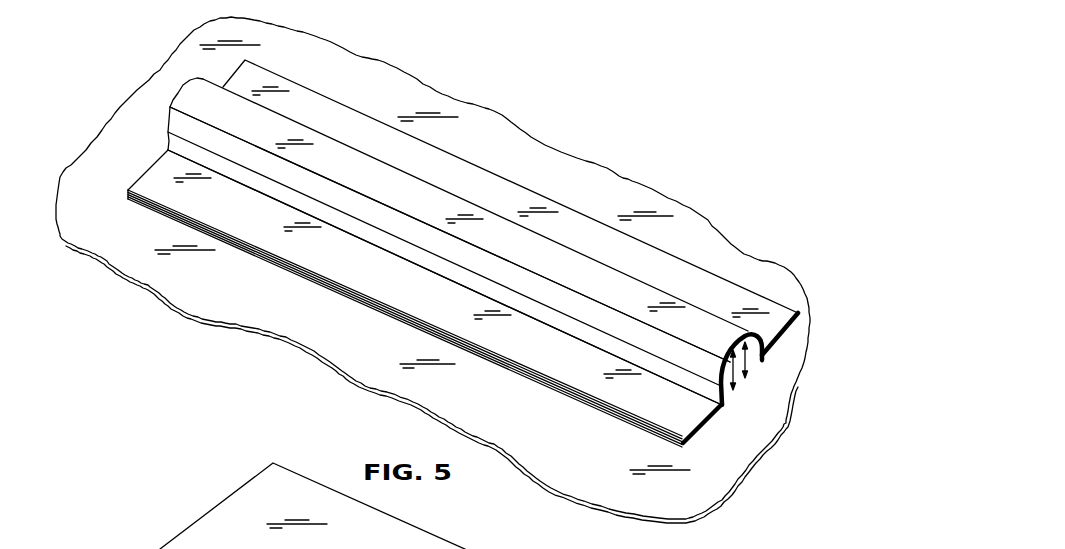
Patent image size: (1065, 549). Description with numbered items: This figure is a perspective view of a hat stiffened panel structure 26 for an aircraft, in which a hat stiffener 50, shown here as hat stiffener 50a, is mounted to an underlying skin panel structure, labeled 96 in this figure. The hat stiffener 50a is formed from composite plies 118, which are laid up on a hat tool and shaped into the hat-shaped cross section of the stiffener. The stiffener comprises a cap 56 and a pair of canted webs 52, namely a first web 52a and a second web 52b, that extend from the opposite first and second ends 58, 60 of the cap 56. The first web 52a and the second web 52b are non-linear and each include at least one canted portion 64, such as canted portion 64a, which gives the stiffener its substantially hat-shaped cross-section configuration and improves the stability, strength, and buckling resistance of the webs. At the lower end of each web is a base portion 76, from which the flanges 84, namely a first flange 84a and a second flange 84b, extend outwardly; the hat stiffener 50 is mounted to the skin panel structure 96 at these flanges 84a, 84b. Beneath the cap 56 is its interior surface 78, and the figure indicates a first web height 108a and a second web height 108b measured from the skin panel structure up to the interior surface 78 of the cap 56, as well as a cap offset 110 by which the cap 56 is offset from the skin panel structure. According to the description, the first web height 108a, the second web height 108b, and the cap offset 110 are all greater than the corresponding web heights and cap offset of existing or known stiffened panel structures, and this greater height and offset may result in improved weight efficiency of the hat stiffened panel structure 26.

The hat stiffened panel structure 26 is at (433, 283).
The hat stiffener 50 is at (510, 183).
The hat stiffener 50a is at (462, 131).
The canted webs 52 is at (444, 264).
The first web 52a is at (640, 456).
The second web 52b is at (811, 310).
The cap 56 is at (617, 294).
The first end 58 is at (450, 236).
The second end 60 is at (620, 183).
The canted portion 64 is at (445, 322).
The support layer edge 64a is at (555, 418).
The base portion 76 is at (771, 449).
The interior surface 78 is at (813, 338).
The laminate stack 84 is at (379, 241).
The first flange 84a is at (137, 231).
The second flange 84b is at (475, 173).
The panel surface 96 is at (483, 401).
The first web height 108a is at (780, 427).
The second web height 108b is at (803, 384).
The cap offset 110 is at (760, 308).
The composite plies 118 is at (405, 318).